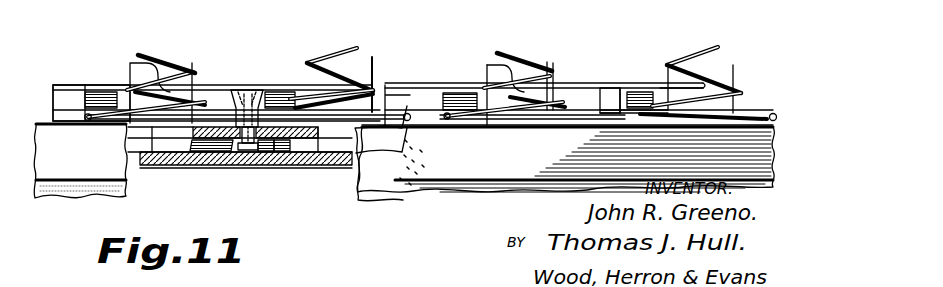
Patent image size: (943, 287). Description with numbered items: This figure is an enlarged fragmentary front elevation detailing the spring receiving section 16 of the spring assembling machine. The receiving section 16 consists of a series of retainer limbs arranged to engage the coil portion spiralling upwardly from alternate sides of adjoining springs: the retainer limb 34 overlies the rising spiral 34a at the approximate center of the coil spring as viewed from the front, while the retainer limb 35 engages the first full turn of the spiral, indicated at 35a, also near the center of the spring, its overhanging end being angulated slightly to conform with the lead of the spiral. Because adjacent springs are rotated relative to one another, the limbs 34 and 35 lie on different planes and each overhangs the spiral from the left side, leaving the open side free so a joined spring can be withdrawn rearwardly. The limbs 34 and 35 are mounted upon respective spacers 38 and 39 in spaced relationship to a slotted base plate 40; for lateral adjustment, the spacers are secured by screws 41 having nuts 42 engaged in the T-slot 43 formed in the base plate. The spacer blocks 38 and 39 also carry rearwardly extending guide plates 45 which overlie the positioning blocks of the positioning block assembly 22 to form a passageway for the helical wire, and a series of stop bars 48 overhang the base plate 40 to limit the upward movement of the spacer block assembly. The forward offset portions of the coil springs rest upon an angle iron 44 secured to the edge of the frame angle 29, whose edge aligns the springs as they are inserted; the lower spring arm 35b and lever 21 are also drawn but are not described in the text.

The spring receiving section 16 is at (246, 84).
The lever 21 is at (338, 50).
The positioning block assembly 22 is at (374, 66).
The angle iron 29 is at (372, 187).
The retainer limb 34 is at (350, 77).
The rising spiral 34a is at (375, 84).
The retainer limb 35 is at (137, 80).
The first full turn of the spiral 35a is at (178, 70).
The spring lower arm 35b is at (131, 92).
The spacer 38 is at (605, 115).
The spacer 39 is at (62, 114).
The slotted base plate 40 is at (214, 142).
The screw 41 is at (255, 98).
The nut 42 is at (263, 148).
The T-slot 43 is at (291, 151).
The angle iron 44 is at (68, 160).
The guide plate 45 is at (283, 91).
The stop bar 48 is at (158, 128).